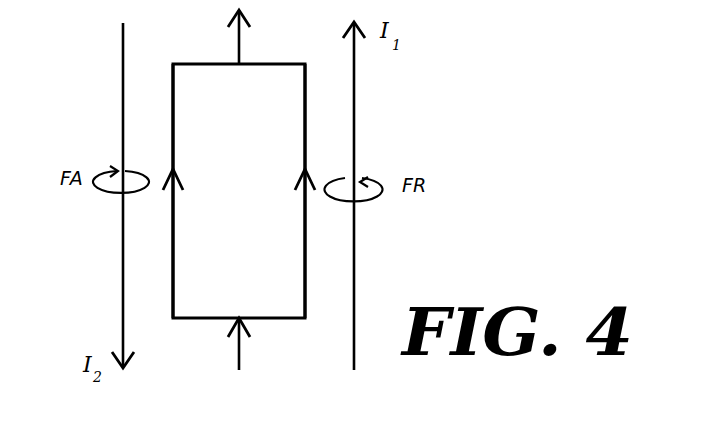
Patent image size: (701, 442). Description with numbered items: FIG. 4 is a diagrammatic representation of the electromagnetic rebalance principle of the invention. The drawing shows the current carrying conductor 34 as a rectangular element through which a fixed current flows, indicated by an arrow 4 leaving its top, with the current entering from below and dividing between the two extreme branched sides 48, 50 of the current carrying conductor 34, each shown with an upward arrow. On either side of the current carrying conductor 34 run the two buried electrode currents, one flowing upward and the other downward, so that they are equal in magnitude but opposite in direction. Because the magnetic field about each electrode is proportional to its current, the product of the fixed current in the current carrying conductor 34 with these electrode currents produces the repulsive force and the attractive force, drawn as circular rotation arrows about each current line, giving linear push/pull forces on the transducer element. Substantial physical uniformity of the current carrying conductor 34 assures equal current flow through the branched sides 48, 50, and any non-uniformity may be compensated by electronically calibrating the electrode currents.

The current carrying conductor 34 is at (202, 64).
The output arrow 4 is at (245, 37).
The branched side of the current carrying conductor 48 is at (173, 148).
The branched side of the current carrying conductor 50 is at (305, 147).